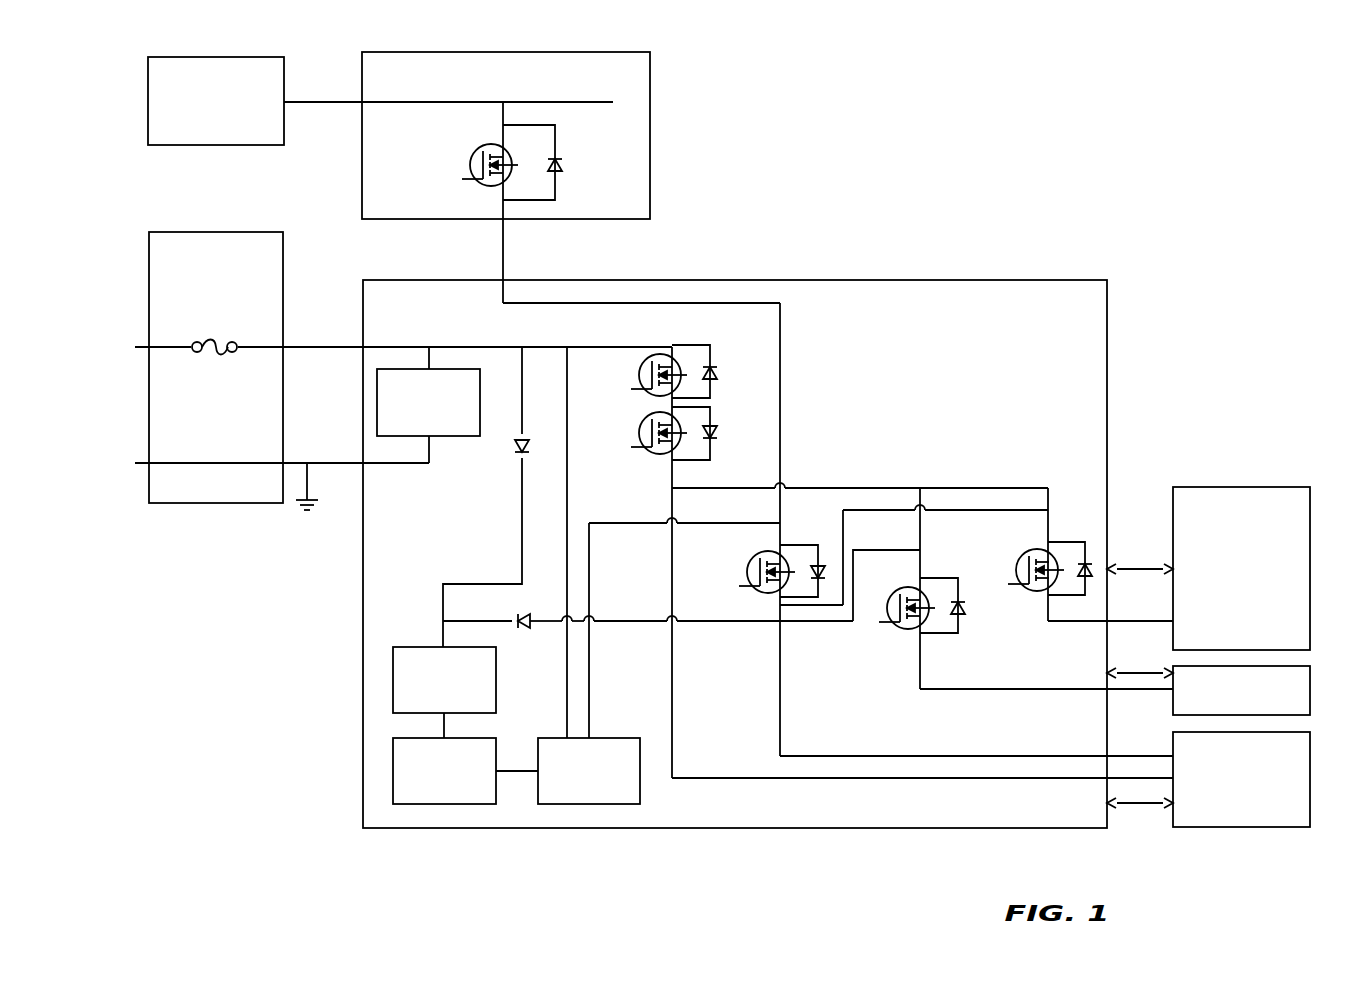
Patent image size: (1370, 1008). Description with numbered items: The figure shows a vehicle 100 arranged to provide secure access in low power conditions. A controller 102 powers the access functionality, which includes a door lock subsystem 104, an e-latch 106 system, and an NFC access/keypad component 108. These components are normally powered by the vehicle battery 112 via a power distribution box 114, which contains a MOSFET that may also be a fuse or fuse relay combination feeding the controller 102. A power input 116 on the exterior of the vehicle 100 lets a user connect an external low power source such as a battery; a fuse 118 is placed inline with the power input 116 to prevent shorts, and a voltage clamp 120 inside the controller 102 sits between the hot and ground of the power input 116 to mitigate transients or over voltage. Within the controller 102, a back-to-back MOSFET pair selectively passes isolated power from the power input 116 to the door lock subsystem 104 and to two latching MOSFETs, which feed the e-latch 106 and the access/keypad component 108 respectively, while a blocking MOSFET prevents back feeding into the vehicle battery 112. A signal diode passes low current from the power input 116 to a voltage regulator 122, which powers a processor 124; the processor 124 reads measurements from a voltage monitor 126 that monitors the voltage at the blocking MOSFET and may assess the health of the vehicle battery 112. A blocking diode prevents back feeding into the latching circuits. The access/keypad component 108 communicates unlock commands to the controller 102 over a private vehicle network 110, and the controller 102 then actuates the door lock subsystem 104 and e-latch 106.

The vehicle 100 is at (306, 33).
The controller 102 is at (1107, 340).
The door lock subsystem 104 is at (1310, 777).
The e-latch 106 is at (1310, 690).
The NFC access/keypad component 108 is at (1310, 600).
The vehicle network 110 is at (1140, 685).
The vehicle battery 112 is at (212, 145).
The power distribution box 114 is at (650, 115).
The power input 116 is at (403, 393).
The fuse 118 is at (403, 304).
The voltage clamp 120 is at (377, 403).
The voltage regulator 122 is at (393, 679).
The processor 124 is at (393, 772).
The voltage monitor 126 is at (587, 806).